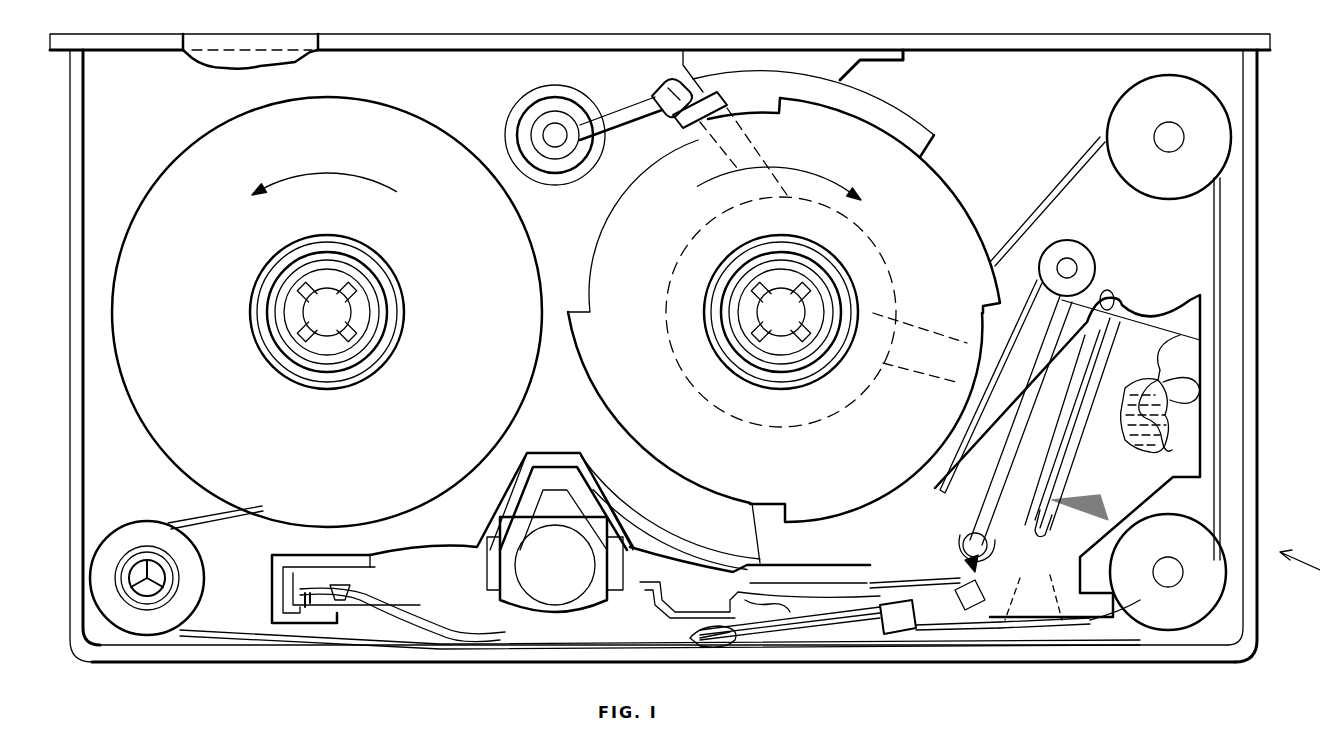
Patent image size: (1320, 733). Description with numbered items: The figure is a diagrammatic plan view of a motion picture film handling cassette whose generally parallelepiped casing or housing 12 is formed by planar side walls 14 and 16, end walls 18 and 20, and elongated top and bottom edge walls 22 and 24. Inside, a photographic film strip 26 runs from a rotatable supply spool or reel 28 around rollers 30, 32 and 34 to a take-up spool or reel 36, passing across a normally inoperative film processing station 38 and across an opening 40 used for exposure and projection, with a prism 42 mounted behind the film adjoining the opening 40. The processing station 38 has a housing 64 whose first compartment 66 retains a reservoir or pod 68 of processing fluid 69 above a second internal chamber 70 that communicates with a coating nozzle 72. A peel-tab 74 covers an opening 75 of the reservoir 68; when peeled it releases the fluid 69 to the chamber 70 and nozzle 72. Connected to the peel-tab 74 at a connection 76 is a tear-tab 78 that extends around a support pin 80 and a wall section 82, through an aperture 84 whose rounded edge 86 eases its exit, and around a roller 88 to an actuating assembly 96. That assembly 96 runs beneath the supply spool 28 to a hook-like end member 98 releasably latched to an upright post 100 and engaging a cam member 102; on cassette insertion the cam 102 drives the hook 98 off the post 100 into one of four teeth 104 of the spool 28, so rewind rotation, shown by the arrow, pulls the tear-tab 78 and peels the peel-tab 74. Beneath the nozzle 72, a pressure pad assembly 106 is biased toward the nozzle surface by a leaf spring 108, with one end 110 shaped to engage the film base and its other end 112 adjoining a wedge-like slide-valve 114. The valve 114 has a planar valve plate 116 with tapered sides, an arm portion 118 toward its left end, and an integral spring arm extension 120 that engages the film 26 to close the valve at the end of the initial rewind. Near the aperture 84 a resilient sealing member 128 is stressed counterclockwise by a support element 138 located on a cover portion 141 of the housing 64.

The casing or housing 12 is at (1030, 115).
The side wall 14 is at (218, 56).
The side wall 16 is at (310, 68).
The end wall 18 is at (70, 190).
The end wall 20 is at (1247, 253).
The top edge wall 22 is at (472, 47).
The bottom edge wall 24 is at (252, 652).
The photographic film strip 26 is at (1070, 178).
The supply spool or reel 28 is at (932, 190).
The roller 30 is at (1192, 92).
The roller 32 is at (1198, 605).
The roller 34 is at (198, 578).
The take-up spool or reel 36 is at (522, 232).
The film processing station 38 is at (1164, 286).
The opening 40 is at (422, 652).
The prism 42 is at (562, 536).
The housing 64 is at (1058, 366).
The first compartment 66 is at (1186, 313).
The reservoir or pod 68 is at (1190, 405).
The processing fluid 69 is at (1148, 448).
The second internal chamber 70 is at (1070, 645).
The coating nozzle 72 is at (1032, 580).
The peel-tab 74 is at (1046, 533).
The opening 75 is at (1080, 448).
The connection 76 is at (1025, 552).
The tear-tab 78 is at (1072, 318).
The support pin 80 is at (1118, 304).
The wall section 82 is at (968, 580).
The aperture 84 is at (950, 548).
The rounded edge 86 is at (965, 540).
The roller 88 is at (1080, 258).
The actuating assembly 96 is at (748, 148).
The hook-like end member 98 is at (670, 84).
The upright post 100 is at (702, 92).
The cam member 102 is at (618, 118).
The teeth 104 is at (785, 110).
The pressure pad assembly 106 is at (924, 676).
The leaf spring 108 is at (952, 640).
The end of pad 110 is at (1150, 645).
The other end of pressure pad assembly 112 is at (898, 638).
The slide-valve 114 is at (830, 642).
The valve plate 116 is at (792, 615).
The arm portion 118 is at (742, 660).
The spring arm extension 120 is at (705, 648).
The sealing member 128 is at (870, 586).
The support element 138 is at (965, 572).
The cover portion 141 is at (1190, 378).